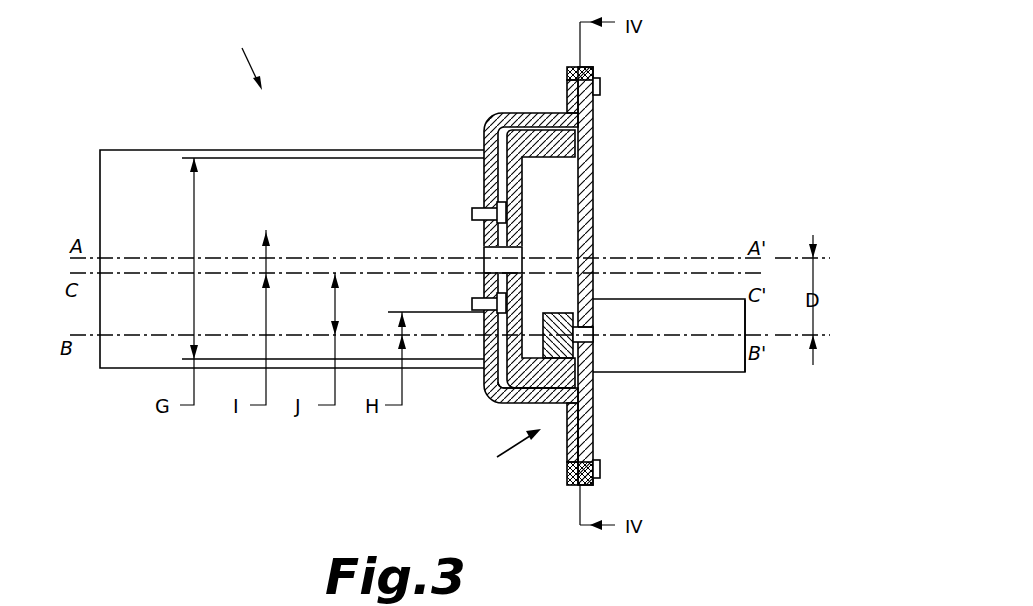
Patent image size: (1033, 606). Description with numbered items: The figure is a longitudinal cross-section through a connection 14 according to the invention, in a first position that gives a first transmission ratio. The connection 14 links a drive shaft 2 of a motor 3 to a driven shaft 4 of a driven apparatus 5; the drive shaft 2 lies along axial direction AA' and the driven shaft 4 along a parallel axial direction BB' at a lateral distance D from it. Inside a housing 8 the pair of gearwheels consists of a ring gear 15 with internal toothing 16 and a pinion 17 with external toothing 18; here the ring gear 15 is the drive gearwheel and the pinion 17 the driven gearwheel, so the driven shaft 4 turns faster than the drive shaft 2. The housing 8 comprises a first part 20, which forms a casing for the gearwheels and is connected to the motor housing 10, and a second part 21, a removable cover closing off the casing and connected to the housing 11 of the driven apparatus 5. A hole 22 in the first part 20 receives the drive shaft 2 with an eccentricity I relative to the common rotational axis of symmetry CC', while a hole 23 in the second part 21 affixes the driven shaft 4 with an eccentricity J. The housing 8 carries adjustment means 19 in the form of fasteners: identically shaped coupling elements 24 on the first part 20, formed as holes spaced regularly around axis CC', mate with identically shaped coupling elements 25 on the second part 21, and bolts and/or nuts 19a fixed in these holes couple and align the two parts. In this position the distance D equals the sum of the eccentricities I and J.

The drive shaft 2 is at (506, 254).
The motor 3 is at (144, 177).
The driven shaft 4 is at (593, 323).
The driven apparatus 5 is at (698, 360).
The housing 8 is at (507, 455).
The motor housing 10 is at (175, 150).
The housing of the driven apparatus 11 is at (747, 370).
The connection 14 is at (245, 55).
The ring gear 15 is at (484, 128).
The internal toothing 16 is at (593, 163).
The pinion 17 is at (555, 314).
The external toothing 18 is at (563, 393).
The adjustment means 19 is at (708, 60).
The bolts and/or nuts 19a is at (600, 88).
The first part of the housing 20 is at (497, 396).
The second part of the housing 21 is at (593, 434).
The hole in the first part 22 is at (484, 243).
The hole in the second part 23 is at (590, 347).
The coupling elements 24 is at (567, 78).
The coupling elements 25 is at (593, 72).